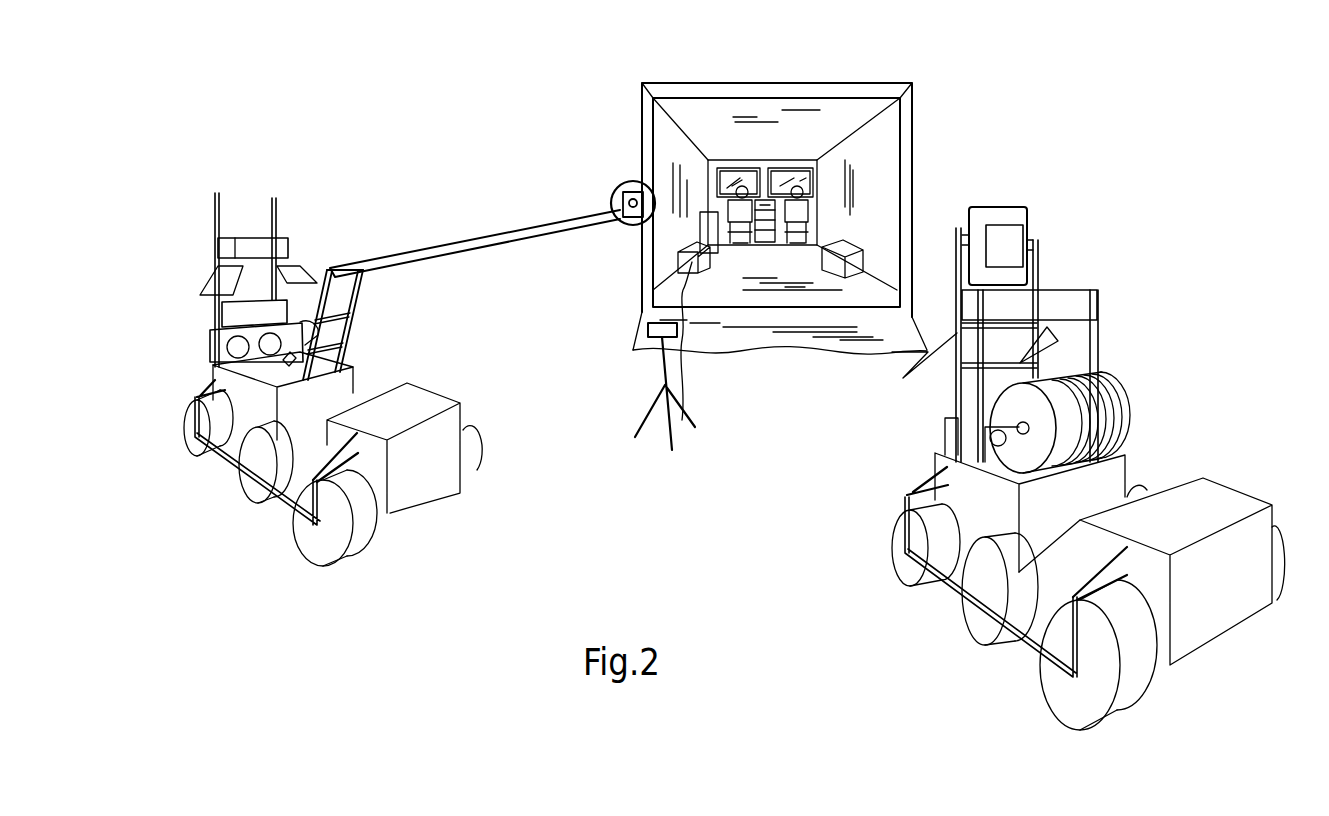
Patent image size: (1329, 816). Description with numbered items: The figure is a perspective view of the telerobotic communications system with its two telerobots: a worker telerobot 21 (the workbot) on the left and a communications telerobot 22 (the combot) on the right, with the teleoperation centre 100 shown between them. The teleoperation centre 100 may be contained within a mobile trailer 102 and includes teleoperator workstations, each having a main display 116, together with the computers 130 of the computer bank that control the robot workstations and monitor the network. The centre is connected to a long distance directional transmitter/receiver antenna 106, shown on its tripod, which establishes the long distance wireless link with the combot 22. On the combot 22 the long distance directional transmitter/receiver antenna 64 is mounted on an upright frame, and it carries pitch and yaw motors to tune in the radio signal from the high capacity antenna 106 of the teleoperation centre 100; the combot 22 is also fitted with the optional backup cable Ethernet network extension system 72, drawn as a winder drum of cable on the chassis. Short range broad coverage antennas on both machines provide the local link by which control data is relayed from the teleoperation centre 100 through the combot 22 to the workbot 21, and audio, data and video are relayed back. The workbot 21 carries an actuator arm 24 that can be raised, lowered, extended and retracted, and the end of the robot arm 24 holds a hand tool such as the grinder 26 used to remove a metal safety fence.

The worker telerobot 21 is at (240, 407).
The communications telerobot 22 is at (1165, 500).
The actuator arm 24 is at (440, 243).
The grinder 26 is at (633, 188).
The long distance directional transmitter/receiver antenna 64 is at (1010, 240).
The backup cable Ethernet network extension system 72 is at (1110, 400).
The teleoperation centre 100 is at (763, 165).
The mobile trailer 102 is at (903, 143).
The long distance directional transmitter/receiver antenna 106 is at (643, 317).
The main display 116 is at (903, 85).
The computer 130 is at (782, 207).